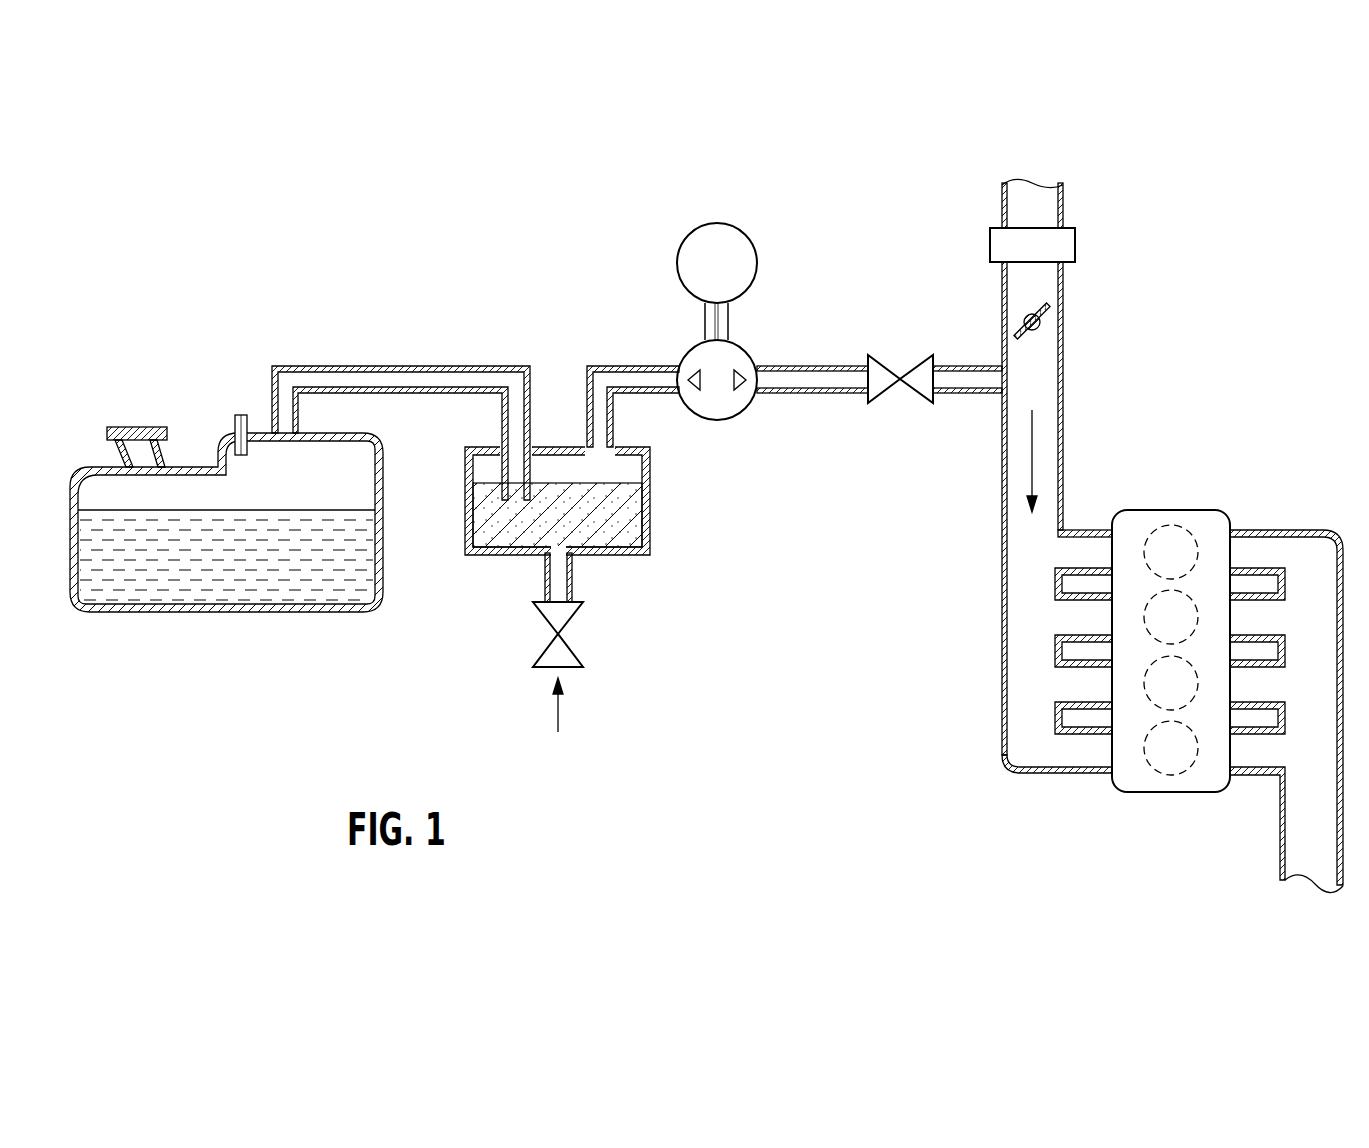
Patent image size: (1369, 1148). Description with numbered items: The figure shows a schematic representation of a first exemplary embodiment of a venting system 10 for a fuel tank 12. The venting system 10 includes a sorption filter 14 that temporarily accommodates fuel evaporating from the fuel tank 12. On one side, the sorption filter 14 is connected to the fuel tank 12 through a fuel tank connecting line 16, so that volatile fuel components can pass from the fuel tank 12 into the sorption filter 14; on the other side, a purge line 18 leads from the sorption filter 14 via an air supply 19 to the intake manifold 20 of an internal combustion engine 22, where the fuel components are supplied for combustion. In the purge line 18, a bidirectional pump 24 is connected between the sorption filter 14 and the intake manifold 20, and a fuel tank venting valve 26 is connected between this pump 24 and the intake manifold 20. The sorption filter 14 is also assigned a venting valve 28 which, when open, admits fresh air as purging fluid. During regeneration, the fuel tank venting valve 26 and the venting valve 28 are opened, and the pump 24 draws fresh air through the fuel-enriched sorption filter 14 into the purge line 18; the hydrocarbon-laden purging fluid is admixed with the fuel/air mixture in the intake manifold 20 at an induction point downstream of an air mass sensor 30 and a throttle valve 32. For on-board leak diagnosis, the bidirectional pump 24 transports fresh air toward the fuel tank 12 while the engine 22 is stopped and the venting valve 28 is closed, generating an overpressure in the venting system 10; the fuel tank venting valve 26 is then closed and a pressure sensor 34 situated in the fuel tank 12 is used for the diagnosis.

The venting system 10 is at (262, 167).
The fuel tank 12 is at (227, 613).
The sorption filter 14 is at (652, 513).
The fuel tank connecting line 16 is at (397, 366).
The purge line 18 is at (605, 366).
The air supply 19 is at (1030, 281).
The intake manifold 20 is at (1063, 402).
The internal combustion engine 22 is at (1205, 526).
The bidirectional pump 24 is at (720, 252).
The fuel tank venting valve 26 is at (882, 376).
The venting valve 28 is at (560, 655).
The air mass sensor 30 is at (1050, 247).
The throttle valve 32 is at (1045, 325).
The pressure sensor 34 is at (226, 421).